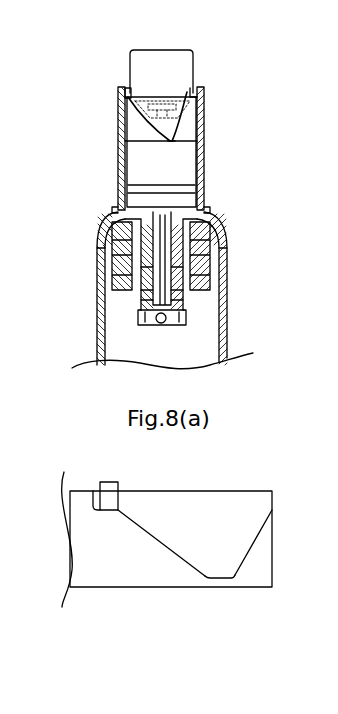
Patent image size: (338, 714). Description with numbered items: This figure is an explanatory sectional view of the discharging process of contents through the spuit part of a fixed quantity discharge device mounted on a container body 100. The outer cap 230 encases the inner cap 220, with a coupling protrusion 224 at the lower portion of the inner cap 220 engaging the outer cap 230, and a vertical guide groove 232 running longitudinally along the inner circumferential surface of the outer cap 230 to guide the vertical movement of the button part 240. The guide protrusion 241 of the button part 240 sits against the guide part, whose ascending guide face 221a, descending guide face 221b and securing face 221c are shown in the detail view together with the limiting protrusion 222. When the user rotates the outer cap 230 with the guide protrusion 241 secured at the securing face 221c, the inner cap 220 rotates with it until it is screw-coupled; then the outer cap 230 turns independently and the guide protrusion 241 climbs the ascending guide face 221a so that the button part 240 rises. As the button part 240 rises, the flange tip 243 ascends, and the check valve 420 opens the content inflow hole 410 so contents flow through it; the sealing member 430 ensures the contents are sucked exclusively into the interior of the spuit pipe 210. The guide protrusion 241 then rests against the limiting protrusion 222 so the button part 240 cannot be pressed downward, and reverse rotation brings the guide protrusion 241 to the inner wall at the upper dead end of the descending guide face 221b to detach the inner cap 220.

The container body 100 is at (102, 351).
The spuit pipe 210 is at (188, 260).
The inner cap 220 is at (142, 167).
The ascending guide face 221a is at (130, 101).
The descending guide face 221b is at (182, 108).
The securing face 221c is at (196, 135).
The limiting protrusion 222 is at (120, 510).
The coupling protrusion 224 is at (138, 188).
The outer cap 230 is at (201, 90).
The vertical guide groove 232 is at (112, 119).
The button part 240 is at (152, 58).
The guide protrusion 241 is at (128, 93).
The flange tip 243 is at (178, 222).
The content inflow hole 410 is at (138, 323).
The check valve 420 is at (140, 312).
The sealing member 430 is at (152, 302).